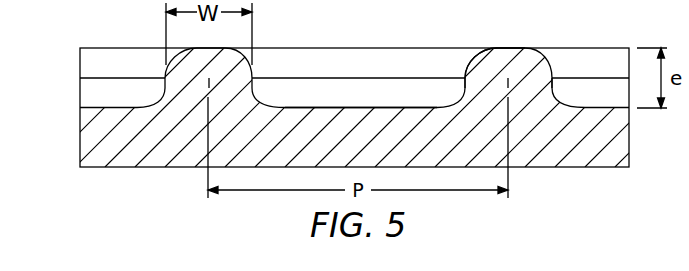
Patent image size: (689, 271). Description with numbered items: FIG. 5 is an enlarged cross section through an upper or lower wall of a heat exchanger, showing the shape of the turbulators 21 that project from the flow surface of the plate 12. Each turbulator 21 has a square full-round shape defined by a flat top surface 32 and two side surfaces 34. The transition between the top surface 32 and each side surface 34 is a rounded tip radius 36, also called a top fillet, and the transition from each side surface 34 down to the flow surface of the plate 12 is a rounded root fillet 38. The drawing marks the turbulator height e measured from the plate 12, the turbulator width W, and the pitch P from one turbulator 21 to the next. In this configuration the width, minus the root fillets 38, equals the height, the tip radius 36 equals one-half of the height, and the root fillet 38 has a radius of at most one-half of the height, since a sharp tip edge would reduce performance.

The plate 12 is at (80, 134).
The turbulator 21 is at (188, 78).
The top surface 32 is at (505, 47).
The side surface 34 is at (465, 78).
The tip radius 36 is at (473, 62).
The root fillet 38 is at (447, 101).